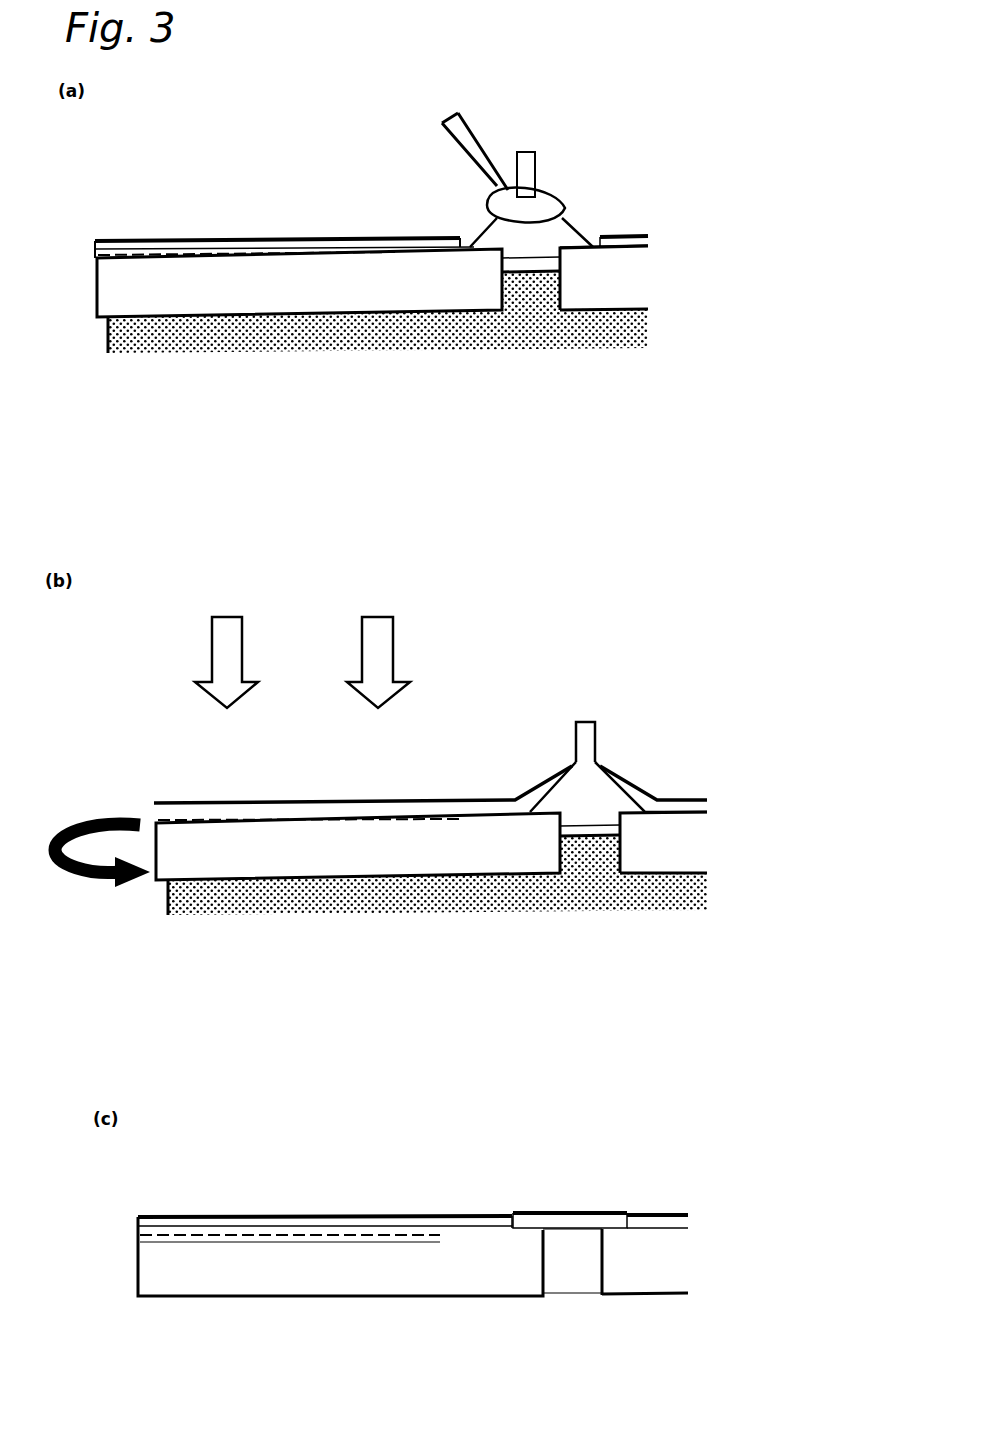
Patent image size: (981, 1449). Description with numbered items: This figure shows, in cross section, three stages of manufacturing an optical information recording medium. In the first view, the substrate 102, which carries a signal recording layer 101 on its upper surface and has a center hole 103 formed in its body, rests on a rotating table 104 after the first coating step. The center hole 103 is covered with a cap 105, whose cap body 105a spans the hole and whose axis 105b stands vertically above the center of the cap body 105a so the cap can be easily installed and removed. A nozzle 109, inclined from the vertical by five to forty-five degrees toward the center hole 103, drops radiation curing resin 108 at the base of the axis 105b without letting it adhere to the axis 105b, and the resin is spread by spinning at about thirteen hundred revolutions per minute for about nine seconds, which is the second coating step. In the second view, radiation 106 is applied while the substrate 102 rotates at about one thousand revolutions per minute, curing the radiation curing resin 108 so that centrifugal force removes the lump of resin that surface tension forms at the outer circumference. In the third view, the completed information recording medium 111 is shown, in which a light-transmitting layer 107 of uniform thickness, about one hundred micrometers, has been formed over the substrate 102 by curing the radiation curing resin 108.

The signal recording layer 101 is at (127, 254).
The substrate 102 is at (180, 293).
The center hole 103 is at (525, 268).
The rotating table 104 is at (220, 327).
The cap 105 is at (541, 152).
The cap body 105a is at (558, 233).
The axis 105b is at (523, 178).
The radiation 106 is at (393, 637).
The light-transmitting layer 107 is at (297, 1220).
The radiation curing resin 108 is at (253, 241).
The nozzle 109 is at (458, 116).
The information recording medium 111 is at (540, 1177).